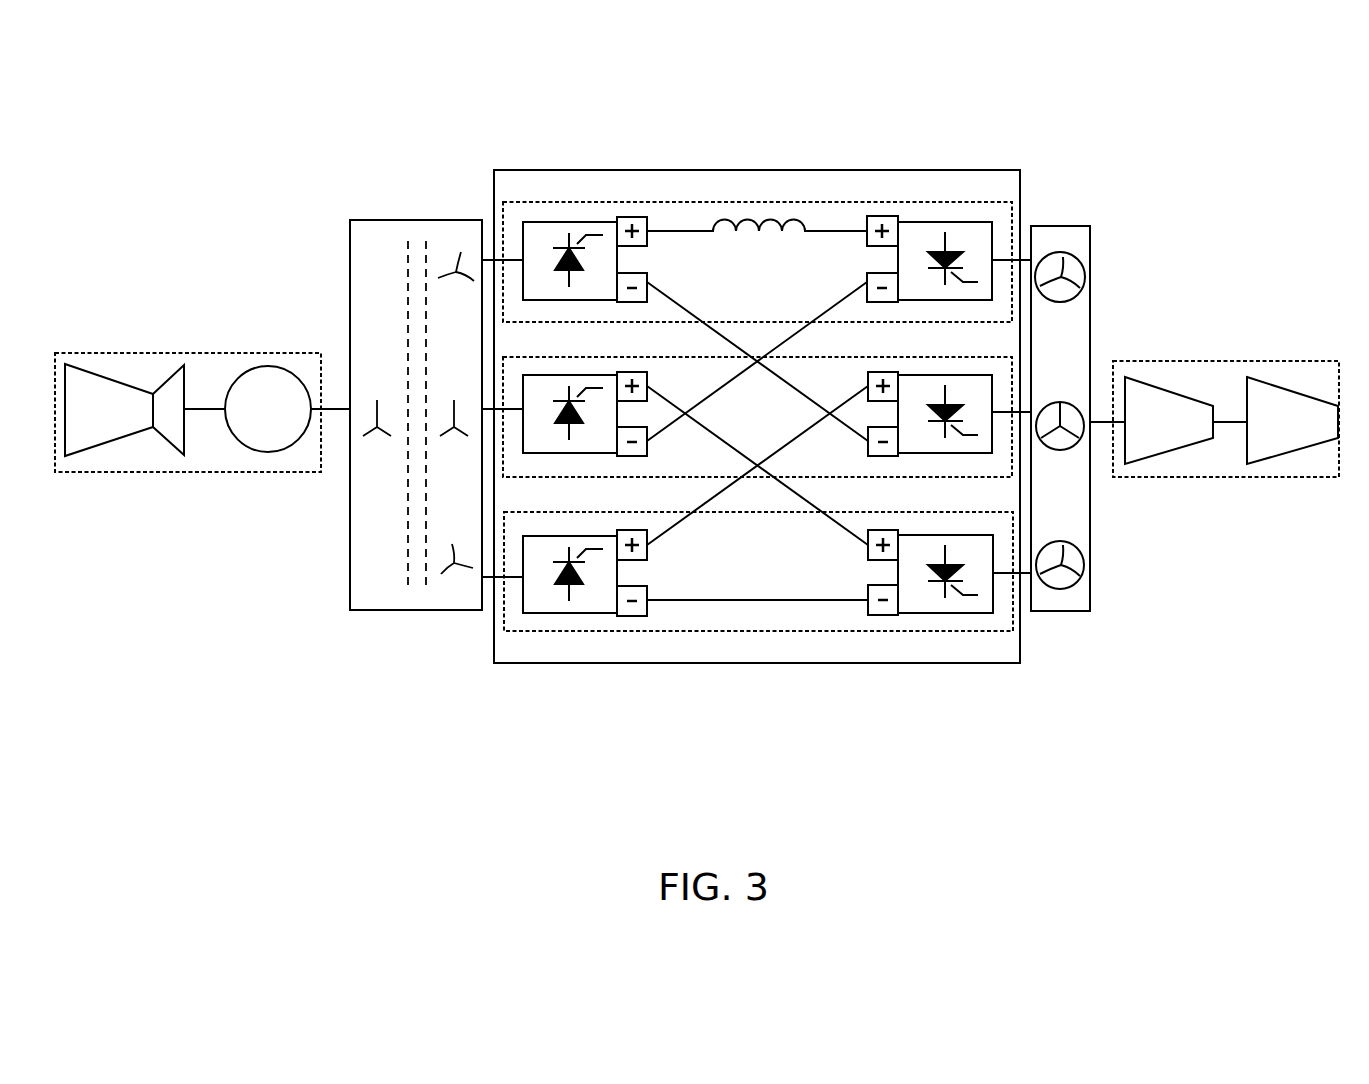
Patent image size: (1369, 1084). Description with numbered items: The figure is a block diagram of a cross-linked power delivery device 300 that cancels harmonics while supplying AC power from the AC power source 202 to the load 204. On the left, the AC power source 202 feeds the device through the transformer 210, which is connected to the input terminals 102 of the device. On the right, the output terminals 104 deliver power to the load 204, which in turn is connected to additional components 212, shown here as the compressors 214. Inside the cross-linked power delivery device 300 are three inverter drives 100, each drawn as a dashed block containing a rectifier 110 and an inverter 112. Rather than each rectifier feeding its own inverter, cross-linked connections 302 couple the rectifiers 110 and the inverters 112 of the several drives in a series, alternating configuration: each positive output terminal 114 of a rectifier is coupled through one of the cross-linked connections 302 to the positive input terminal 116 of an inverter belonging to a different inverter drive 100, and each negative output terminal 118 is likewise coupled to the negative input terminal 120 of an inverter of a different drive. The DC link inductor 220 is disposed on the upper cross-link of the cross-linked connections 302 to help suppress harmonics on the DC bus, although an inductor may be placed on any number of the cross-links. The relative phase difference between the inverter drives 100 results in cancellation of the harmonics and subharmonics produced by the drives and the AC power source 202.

The inverter drive 100 is at (609, 323).
The input terminal 102 is at (514, 250).
The output terminal 104 is at (1000, 258).
The rectifier 110 is at (618, 250).
The inverter 112 is at (897, 260).
The positive output terminal 114 is at (633, 217).
The positive input terminal 116 is at (882, 216).
The negative output terminal 118 is at (650, 281).
The negative input terminal 120 is at (867, 282).
The AC power source 202 is at (168, 353).
The load 204 is at (1089, 578).
The transformer 210 is at (350, 515).
The additional components 212 is at (1267, 477).
The compressor 214 is at (1178, 392).
The DC link inductor 220 is at (793, 218).
The cross-linked power delivery device 300 is at (992, 169).
The cross-linked connection 302 is at (680, 231).